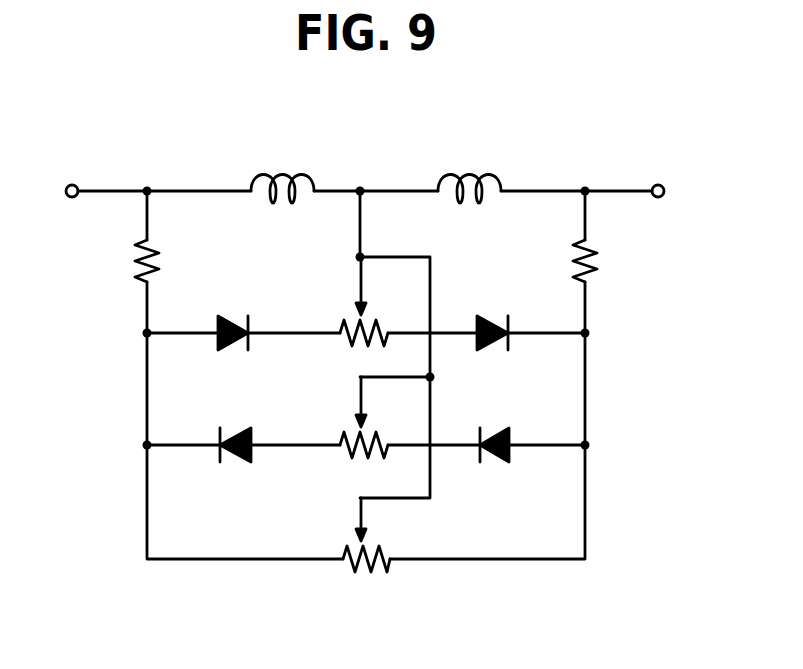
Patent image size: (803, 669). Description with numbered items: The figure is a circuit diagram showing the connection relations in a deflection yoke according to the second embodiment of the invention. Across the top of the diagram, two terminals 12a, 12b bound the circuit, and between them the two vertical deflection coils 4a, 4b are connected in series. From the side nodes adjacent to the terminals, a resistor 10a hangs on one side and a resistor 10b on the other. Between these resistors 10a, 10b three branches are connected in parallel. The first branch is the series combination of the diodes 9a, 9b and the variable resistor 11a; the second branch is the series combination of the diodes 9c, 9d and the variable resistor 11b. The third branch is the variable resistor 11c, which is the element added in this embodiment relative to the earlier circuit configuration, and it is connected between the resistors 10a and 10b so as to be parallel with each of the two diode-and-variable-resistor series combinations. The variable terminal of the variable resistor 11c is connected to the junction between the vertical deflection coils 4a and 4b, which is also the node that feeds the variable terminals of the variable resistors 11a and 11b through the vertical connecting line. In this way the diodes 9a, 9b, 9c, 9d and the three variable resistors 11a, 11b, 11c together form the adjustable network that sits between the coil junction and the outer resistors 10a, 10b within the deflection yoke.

The terminal 12a is at (72, 184).
The terminal 12b is at (658, 184).
The vertical deflection coil 4a is at (281, 175).
The vertical deflection coil 4b is at (473, 175).
The resistor 10a is at (140, 249).
The resistor 10b is at (598, 263).
The diode 9a is at (239, 314).
The diode 9b is at (498, 314).
The diode 9c is at (233, 464).
The diode 9d is at (495, 464).
The variable resistor 11a is at (350, 350).
The variable resistor 11b is at (350, 462).
The variable resistor 11c is at (362, 576).